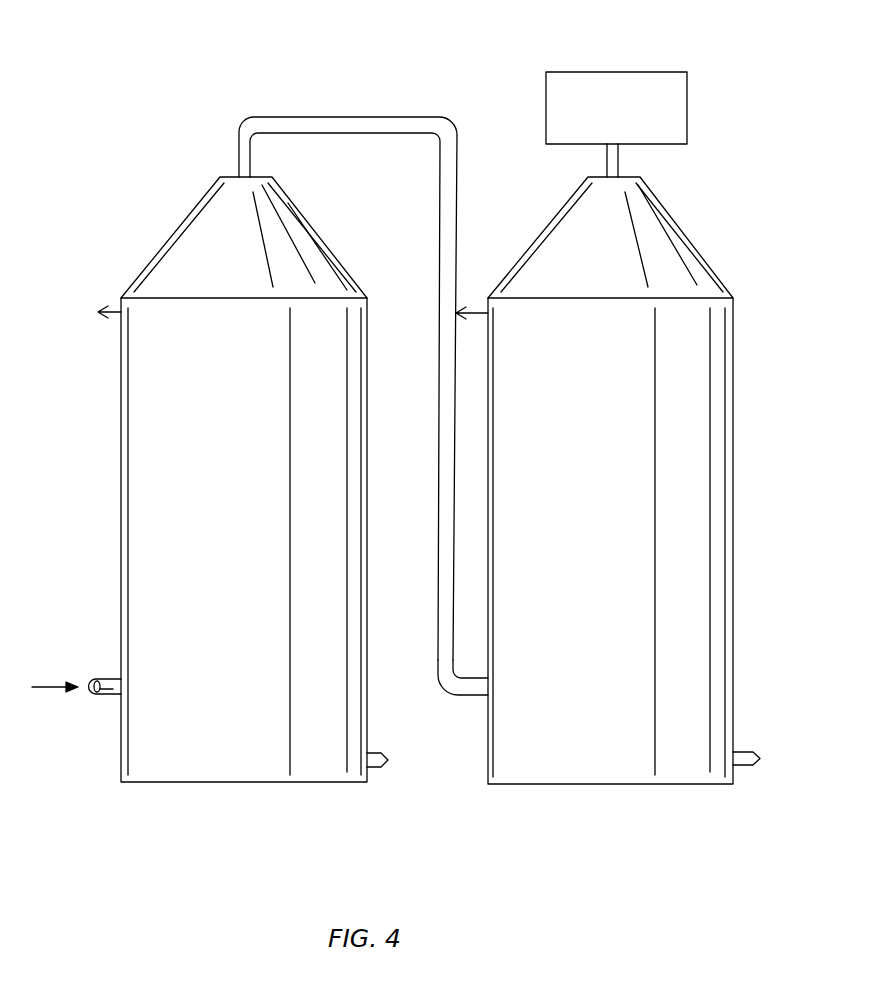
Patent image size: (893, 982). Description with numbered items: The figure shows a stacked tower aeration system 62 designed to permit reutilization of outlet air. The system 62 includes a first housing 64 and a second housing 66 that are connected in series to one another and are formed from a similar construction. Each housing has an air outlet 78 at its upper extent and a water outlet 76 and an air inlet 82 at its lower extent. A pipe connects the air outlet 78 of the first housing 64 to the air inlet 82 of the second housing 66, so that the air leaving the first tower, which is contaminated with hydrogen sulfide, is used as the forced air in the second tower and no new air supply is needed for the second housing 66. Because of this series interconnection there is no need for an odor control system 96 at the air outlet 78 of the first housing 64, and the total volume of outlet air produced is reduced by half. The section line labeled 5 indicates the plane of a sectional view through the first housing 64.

The section line 5- 5 is at (180, 60).
The stacked tower aeration system 62 is at (586, 72).
The first housing 64 is at (198, 242).
The second housing 66 is at (692, 260).
The water outlet 76 is at (377, 770).
The air outlet 78 is at (243, 152).
The air inlet 82 is at (102, 695).
The odor control system 96 is at (546, 97).